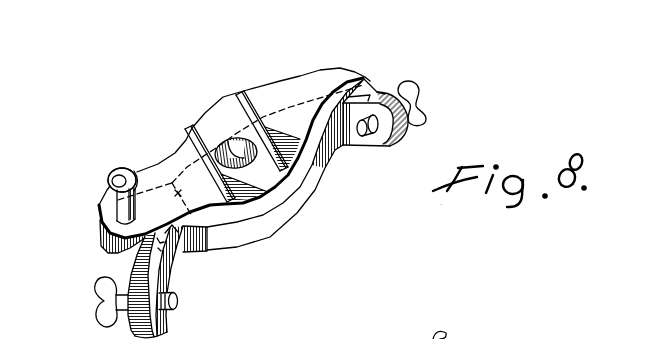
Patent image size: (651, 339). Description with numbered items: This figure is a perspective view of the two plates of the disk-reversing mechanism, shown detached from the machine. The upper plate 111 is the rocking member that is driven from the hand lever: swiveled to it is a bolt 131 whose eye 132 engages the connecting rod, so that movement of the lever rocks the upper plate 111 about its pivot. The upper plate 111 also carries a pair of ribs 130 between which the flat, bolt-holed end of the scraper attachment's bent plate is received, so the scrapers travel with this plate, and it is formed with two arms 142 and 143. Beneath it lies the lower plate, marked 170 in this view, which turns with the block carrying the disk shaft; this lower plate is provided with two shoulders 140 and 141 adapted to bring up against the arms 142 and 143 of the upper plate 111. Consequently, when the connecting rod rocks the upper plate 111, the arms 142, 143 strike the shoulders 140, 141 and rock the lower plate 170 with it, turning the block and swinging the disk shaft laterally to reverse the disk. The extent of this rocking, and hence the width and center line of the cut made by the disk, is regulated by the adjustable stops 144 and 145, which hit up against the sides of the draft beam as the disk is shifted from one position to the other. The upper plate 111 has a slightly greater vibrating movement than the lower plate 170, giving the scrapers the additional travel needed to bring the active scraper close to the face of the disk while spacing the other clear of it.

The upper plate 111 is at (322, 33).
The ribs 130 is at (242, 71).
The bolt 131 is at (31, 212).
The eye 132 is at (71, 143).
The shoulder 140 is at (208, 283).
The shoulder 141 is at (433, 92).
The arm 142 is at (30, 268).
The arm 143 is at (426, 28).
The adjustable stop 144 is at (22, 332).
The adjustable stop 145 is at (476, 55).
The bracket body 170 is at (309, 231).